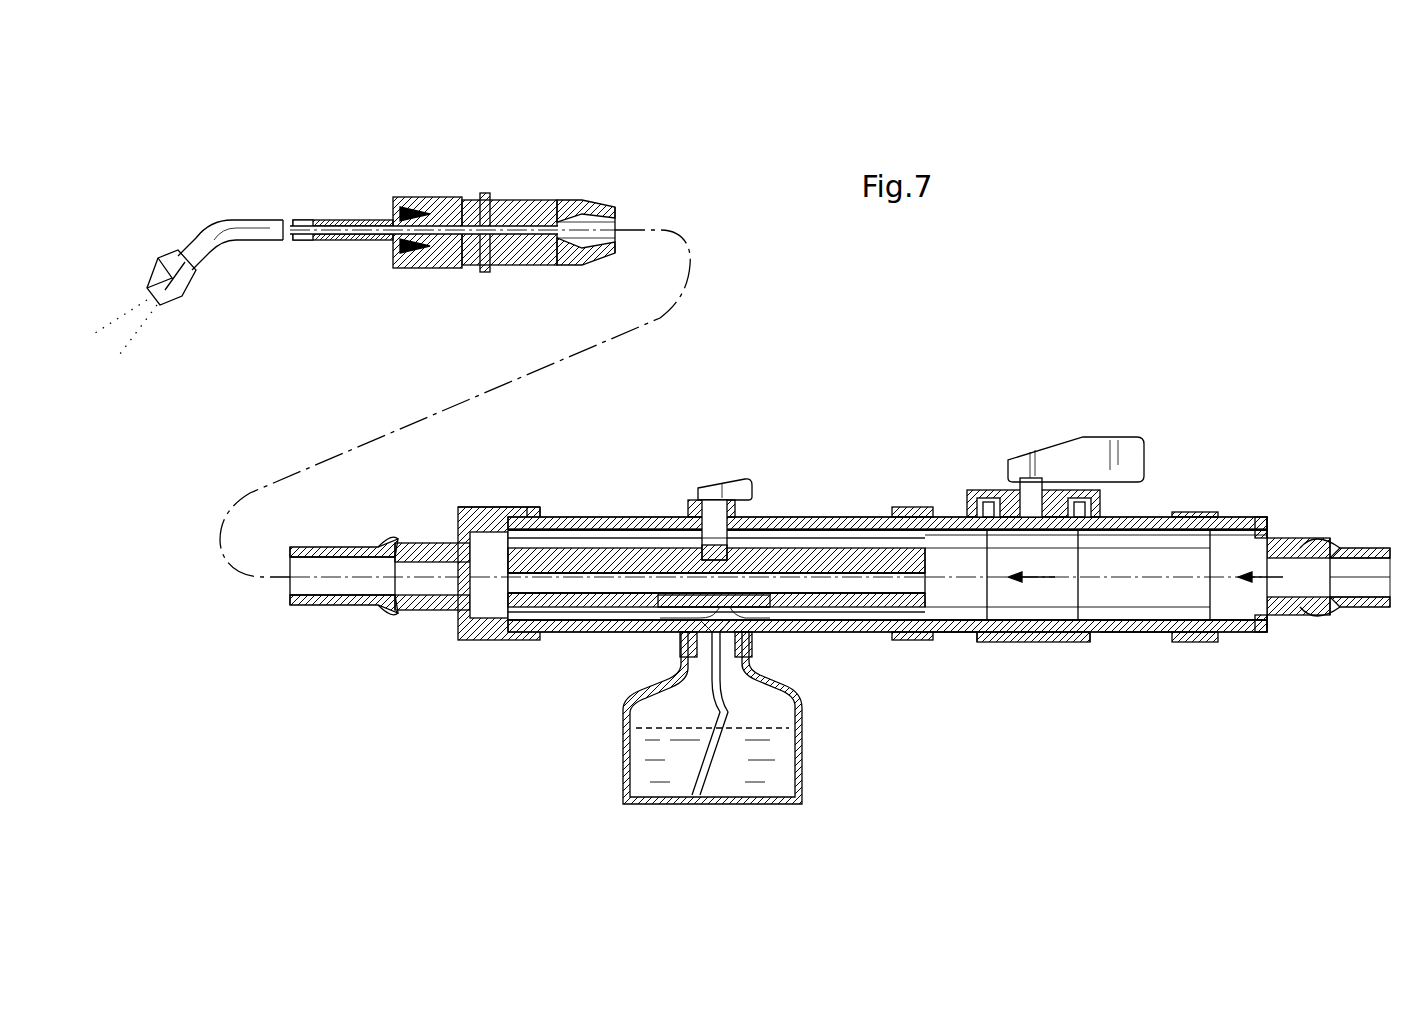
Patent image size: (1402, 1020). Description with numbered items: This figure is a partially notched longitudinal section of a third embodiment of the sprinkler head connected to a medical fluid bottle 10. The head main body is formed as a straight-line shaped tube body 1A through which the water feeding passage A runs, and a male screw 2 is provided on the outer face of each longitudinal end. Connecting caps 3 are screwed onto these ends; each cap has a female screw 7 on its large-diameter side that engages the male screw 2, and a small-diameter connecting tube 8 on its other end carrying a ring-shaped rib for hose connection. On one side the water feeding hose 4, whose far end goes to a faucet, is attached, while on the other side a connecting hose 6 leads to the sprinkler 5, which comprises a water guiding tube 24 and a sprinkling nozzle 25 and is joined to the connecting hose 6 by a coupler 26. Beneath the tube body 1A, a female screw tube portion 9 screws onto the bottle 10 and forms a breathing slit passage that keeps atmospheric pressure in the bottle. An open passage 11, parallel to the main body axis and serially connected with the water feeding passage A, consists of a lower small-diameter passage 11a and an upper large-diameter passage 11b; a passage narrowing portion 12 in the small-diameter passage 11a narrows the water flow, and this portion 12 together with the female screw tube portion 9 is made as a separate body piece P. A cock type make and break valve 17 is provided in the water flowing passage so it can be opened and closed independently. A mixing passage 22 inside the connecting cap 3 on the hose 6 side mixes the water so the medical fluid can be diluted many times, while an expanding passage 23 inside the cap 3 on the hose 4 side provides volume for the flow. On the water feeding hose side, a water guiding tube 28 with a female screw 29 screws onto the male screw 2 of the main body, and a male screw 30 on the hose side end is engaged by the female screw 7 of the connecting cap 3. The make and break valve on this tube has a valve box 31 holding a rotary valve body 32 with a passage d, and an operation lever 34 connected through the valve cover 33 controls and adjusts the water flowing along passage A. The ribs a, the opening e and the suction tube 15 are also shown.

The straight-line shaped tube body 1A is at (822, 517).
The male screw 2 is at (528, 507).
The connecting cap 3 is at (483, 507).
The water feeding hose 4 is at (1365, 548).
The sprinkler 5 is at (273, 160).
The connecting hose 6 is at (590, 207).
The female screw 7 is at (548, 633).
The small-diameter connecting tube 8 is at (378, 607).
The female screw tube portion 9 is at (752, 650).
The medical fluid bottle 10 is at (630, 760).
The open passage 11 is at (840, 742).
The small-diameter passage 11a is at (888, 633).
The large-diameter passage 11b is at (853, 632).
The passage narrowing portion 12 is at (800, 616).
The suction tube 15 is at (720, 700).
The make and break valve 17 is at (750, 478).
The mixing passage 22 is at (482, 640).
The expanding passage 23 is at (1235, 612).
The water guiding tube 24 is at (252, 218).
The sprinkling nozzle 25 is at (165, 255).
The coupler 26 is at (430, 197).
The water guiding tube 28 is at (1115, 633).
The female screw 29 is at (937, 637).
The male screw 30 is at (1203, 510).
The valve box 31 is at (1040, 643).
The rotary valve body 32 is at (1005, 642).
The valve cover 33 is at (980, 490).
The operation lever 34 is at (1147, 457).
The barb a is at (412, 540).
The passage d is at (1040, 580).
The suction opening e is at (680, 650).
The separate body piece P is at (657, 616).
The water feeding passage A is at (1268, 582).